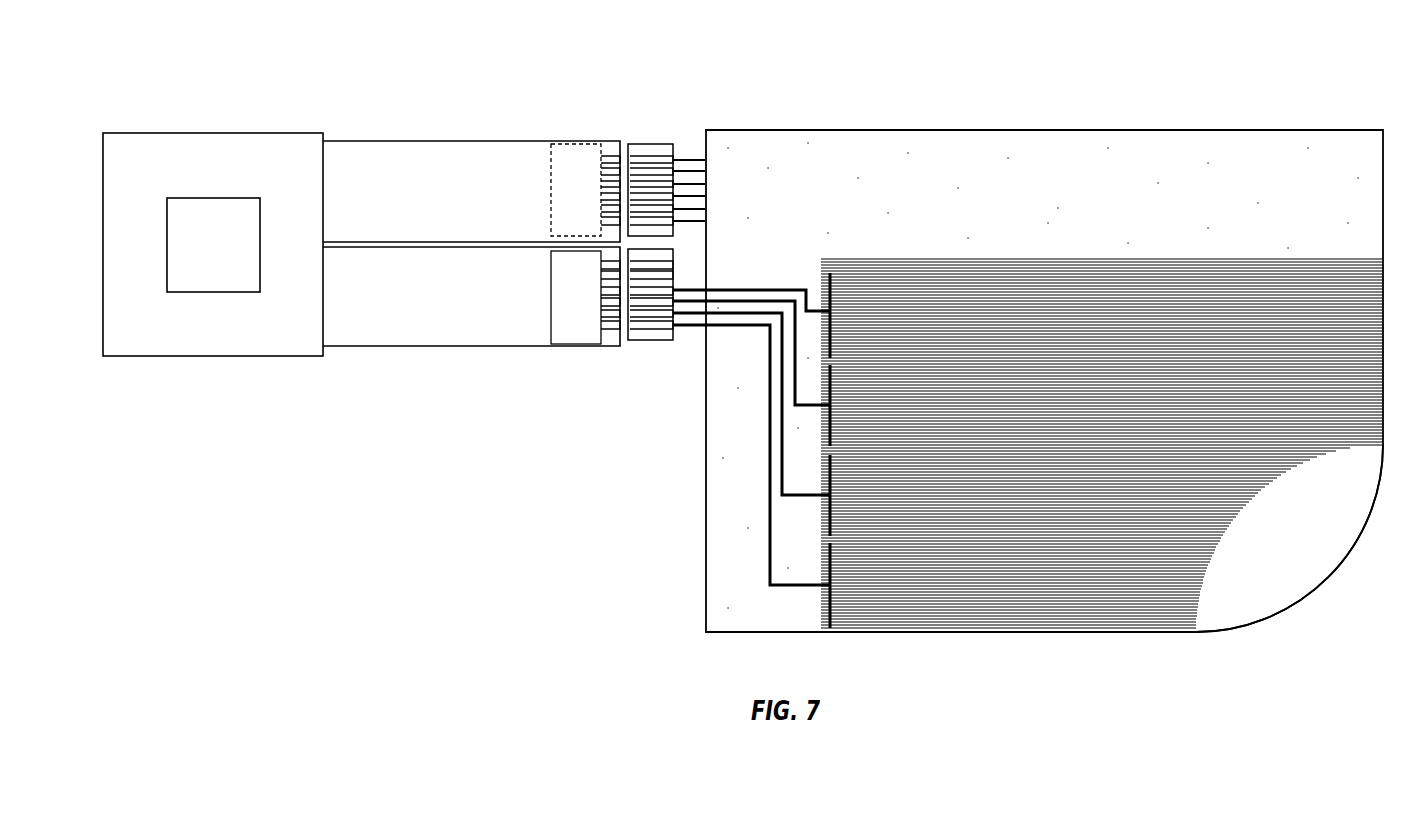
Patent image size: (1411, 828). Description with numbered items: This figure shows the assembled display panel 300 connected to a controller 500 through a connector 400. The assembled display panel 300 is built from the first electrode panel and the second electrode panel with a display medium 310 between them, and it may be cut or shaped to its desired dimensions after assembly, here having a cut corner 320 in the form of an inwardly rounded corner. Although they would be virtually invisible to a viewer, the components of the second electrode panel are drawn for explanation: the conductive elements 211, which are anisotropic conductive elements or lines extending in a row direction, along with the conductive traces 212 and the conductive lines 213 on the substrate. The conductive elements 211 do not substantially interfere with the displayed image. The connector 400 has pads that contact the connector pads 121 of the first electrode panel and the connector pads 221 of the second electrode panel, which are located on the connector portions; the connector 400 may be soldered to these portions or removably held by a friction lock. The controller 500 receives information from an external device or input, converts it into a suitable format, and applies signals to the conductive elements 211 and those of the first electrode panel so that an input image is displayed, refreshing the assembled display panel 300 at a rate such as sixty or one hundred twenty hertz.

The controller 500 is at (153, 98).
The connector 400 is at (560, 348).
The connector pads 121 is at (638, 150).
The connector pads 221 is at (641, 318).
The assembled display panel 300 is at (1320, 93).
The display medium 310 is at (1038, 130).
The cut corner 320 is at (1247, 495).
The conductive elements 211 is at (1105, 603).
The conductive traces 212 is at (819, 592).
The conductive lines 213 is at (760, 470).